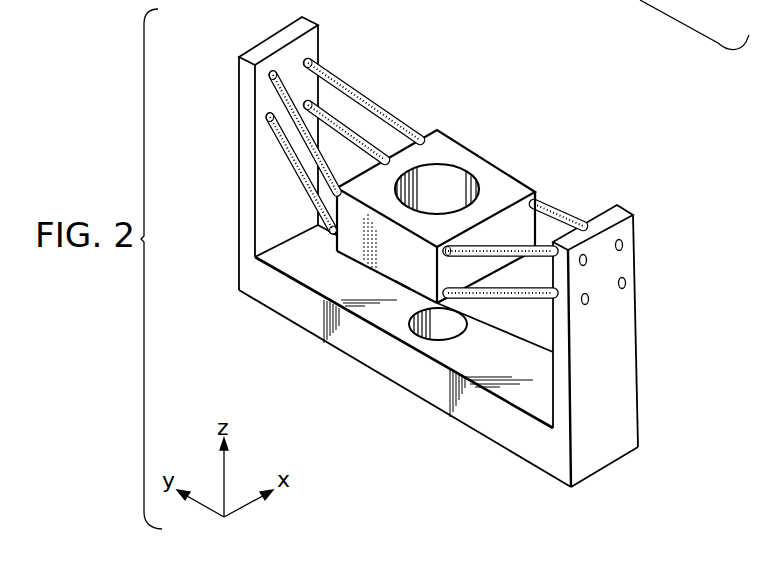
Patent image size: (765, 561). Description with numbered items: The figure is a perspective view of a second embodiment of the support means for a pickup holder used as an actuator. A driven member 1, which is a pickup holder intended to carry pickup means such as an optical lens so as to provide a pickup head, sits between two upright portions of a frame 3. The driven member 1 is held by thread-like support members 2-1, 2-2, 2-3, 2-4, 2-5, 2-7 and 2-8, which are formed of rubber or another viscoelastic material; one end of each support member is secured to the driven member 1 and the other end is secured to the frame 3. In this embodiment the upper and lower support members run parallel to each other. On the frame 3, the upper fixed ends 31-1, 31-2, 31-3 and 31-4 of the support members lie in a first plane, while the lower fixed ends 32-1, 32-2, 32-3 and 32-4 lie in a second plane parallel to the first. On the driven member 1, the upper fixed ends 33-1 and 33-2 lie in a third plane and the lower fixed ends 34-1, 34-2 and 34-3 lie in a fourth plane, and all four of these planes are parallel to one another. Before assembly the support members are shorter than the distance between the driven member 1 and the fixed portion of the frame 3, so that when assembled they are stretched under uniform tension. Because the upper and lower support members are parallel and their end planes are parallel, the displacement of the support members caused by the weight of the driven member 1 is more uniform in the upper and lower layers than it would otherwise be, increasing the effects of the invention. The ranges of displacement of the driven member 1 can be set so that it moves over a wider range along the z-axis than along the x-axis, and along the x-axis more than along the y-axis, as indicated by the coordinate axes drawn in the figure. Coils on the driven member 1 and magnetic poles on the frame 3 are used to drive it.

The driven member 1 is at (450, 135).
The frame 3 is at (621, 214).
The support member 2-1 is at (345, 84).
The support member 2-2 is at (558, 212).
The support member 2-3 is at (528, 258).
The support member 2-4 is at (275, 97).
The support member 2-5 is at (362, 141).
The support member 2-7 is at (498, 284).
The support member 2-8 is at (288, 153).
The upper fixed end 31-1 is at (624, 245).
The upper fixed end 31-2 is at (588, 261).
The upper fixed end 31-3 is at (273, 76).
The upper fixed end 31-4 is at (308, 53).
The lower fixed end 32-1 is at (627, 283).
The lower fixed end 32-2 is at (589, 301).
The lower fixed end 32-3 is at (270, 117).
The lower fixed end 32-4 is at (318, 97).
The upper fixed end 33-1 is at (531, 192).
The upper fixed end 33-2 is at (403, 277).
The lower fixed end 34-1 is at (535, 247).
The lower fixed end 34-2 is at (437, 304).
The lower fixed end 34-3 is at (317, 224).